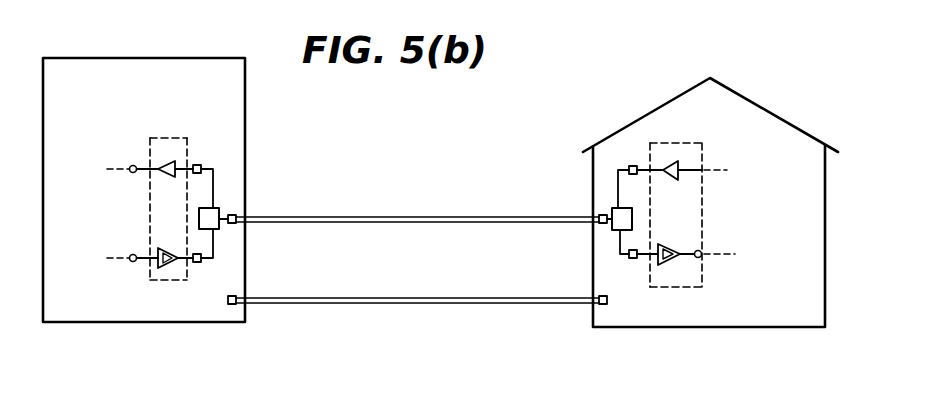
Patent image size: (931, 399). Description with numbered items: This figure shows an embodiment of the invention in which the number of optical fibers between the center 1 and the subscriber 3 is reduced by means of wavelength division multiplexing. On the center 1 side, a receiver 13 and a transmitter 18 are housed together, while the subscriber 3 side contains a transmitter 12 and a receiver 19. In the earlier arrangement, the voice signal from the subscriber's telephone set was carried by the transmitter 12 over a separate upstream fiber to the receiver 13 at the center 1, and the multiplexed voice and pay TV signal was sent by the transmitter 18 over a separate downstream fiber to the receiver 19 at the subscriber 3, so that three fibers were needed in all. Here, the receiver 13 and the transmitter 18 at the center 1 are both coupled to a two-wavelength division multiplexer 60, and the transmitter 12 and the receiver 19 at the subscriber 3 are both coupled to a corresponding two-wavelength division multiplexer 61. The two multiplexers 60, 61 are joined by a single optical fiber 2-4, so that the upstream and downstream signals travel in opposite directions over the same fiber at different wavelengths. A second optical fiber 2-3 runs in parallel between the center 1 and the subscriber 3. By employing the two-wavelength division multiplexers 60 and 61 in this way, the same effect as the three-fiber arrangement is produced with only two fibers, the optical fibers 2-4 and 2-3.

The center 1 is at (152, 58).
The subscriber 3 is at (775, 113).
The transmitter 12 is at (673, 162).
The receiver 13 is at (170, 160).
The transmitter 18 is at (168, 249).
The receiver 19 is at (680, 247).
The two-wavelength division multiplexer 60 is at (219, 209).
The two-wavelength division multiplexer 61 is at (617, 231).
The optical fiber 2-4 is at (410, 217).
The optical fiber 2-3 is at (413, 298).